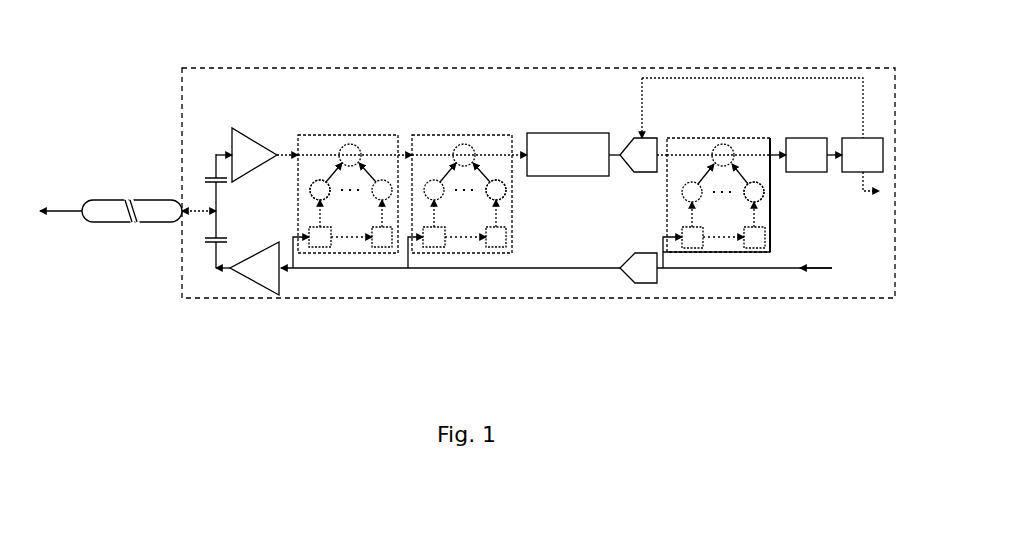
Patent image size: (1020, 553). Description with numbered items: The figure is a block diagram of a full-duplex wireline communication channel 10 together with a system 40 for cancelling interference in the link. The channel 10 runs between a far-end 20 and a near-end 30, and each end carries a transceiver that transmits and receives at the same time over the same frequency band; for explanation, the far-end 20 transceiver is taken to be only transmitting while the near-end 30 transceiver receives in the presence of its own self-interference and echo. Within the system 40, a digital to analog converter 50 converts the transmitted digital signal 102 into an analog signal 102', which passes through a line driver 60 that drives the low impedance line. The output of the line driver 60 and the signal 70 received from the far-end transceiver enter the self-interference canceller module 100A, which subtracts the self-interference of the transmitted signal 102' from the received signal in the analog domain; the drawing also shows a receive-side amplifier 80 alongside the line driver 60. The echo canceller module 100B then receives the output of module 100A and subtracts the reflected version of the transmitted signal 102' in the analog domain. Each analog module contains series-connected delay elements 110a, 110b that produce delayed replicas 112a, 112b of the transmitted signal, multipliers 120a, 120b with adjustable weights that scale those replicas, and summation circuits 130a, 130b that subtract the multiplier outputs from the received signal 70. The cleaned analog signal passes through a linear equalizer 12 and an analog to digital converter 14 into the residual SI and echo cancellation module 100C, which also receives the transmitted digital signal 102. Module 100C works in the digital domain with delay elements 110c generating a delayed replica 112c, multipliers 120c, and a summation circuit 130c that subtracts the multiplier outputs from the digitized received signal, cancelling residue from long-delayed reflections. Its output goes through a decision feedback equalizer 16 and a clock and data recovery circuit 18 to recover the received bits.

The full-duplex wireline communication channel 10 is at (117, 196).
The linear equalizer 12 is at (543, 133).
The analog to digital converter 14 is at (630, 141).
The decision feedback equalizer 16 is at (797, 138).
The clock and data recovery circuit 18 is at (862, 140).
The far-end 20 is at (70, 213).
The near-end 30 is at (848, 268).
The system for cancelling interference 40 is at (412, 298).
The digital to analog converter 50 is at (630, 285).
The line driver 60 is at (262, 272).
The received signal 70 is at (190, 203).
The receive amplifier 80 is at (252, 128).
The self-interference canceller module 100A is at (345, 238).
The echo canceller module 100B is at (468, 238).
The residual SI and echo cancellation module 100C is at (734, 234).
The transmitted digital signal 102 is at (716, 291).
The analog signal 102' is at (450, 299).
The delayed replica 112a is at (309, 205).
The delayed replica 112b is at (497, 203).
The delayed replica 112c is at (753, 212).
The delay elements 110a is at (350, 237).
The delay elements 110b is at (464, 237).
The delay elements 110c is at (723, 237).
The multipliers 120a is at (351, 190).
The multipliers 120b is at (465, 190).
The multipliers 120c is at (723, 192).
The summation circuit 130a is at (350, 155).
The summation circuit 130b is at (464, 155).
The summation circuit 130c is at (723, 155).